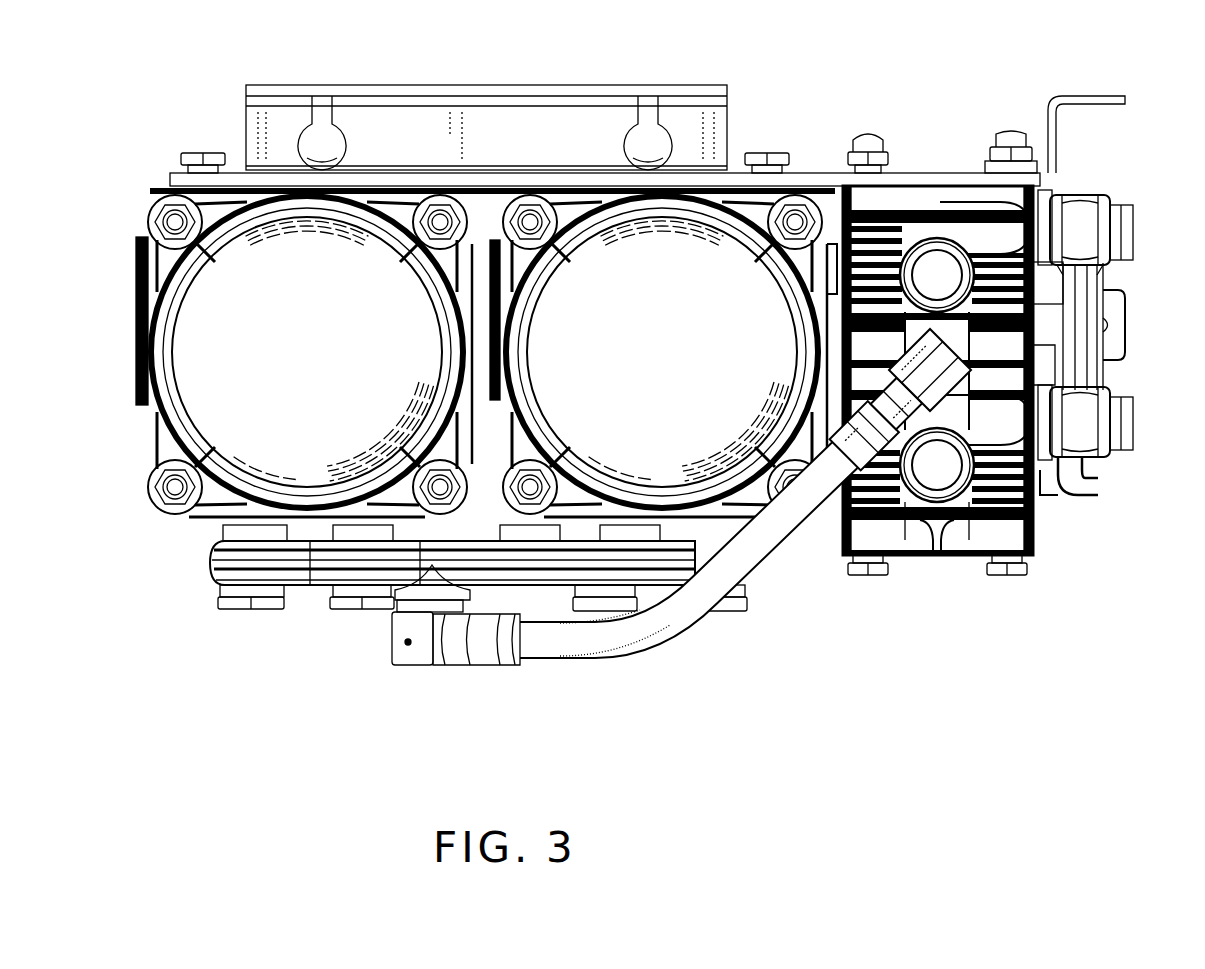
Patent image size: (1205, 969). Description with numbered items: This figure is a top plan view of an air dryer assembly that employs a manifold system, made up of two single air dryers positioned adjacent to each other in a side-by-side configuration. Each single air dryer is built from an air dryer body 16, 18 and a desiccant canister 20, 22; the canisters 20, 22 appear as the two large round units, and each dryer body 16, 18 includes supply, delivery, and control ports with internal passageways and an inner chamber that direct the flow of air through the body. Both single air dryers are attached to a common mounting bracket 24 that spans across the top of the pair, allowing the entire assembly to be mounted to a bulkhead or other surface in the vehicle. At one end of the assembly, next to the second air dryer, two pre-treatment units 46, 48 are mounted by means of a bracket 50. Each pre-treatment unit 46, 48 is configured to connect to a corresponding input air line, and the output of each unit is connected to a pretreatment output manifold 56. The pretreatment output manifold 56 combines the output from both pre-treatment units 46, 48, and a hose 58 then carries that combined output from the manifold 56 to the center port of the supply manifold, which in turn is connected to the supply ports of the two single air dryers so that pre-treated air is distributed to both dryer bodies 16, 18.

The air dryer body 16 is at (663, 291).
The air dryer body 18 is at (293, 291).
The desiccant canister 20 is at (307, 352).
The desiccant canister 22 is at (662, 352).
The common mounting bracket 24 is at (495, 135).
The pre-treatment unit 46 is at (1003, 234).
The pre-treatment unit 48 is at (1023, 412).
The bracket 50 is at (907, 177).
The pretreatment output manifold 56 is at (957, 417).
The hose 58 is at (773, 530).